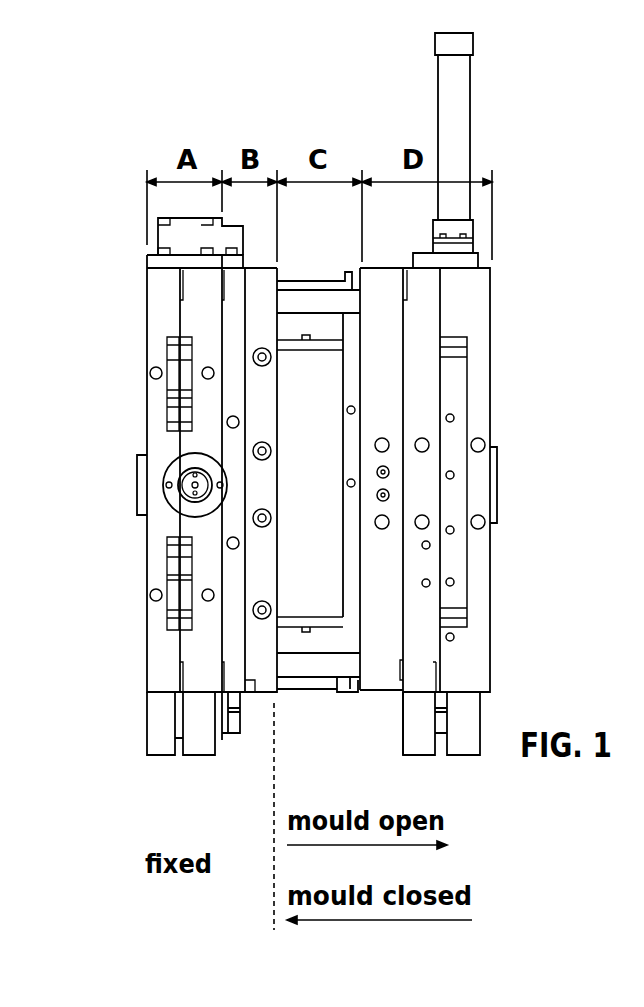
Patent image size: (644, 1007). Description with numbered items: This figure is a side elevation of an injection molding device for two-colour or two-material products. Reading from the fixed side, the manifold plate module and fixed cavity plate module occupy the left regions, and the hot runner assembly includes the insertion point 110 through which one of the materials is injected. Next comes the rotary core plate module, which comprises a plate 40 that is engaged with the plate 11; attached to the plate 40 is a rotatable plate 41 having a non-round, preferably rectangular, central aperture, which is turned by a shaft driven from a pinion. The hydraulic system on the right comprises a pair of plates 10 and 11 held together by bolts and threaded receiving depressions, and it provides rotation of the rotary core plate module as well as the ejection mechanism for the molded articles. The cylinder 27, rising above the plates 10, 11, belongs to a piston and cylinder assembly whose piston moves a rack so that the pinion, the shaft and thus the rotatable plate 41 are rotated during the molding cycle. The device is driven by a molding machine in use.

The plate 10 is at (470, 313).
The plate 11 is at (417, 638).
The cylinder 27 is at (457, 147).
The plate 40 is at (386, 684).
The rotatable plate 41 is at (349, 682).
The insertion point 110 is at (173, 498).